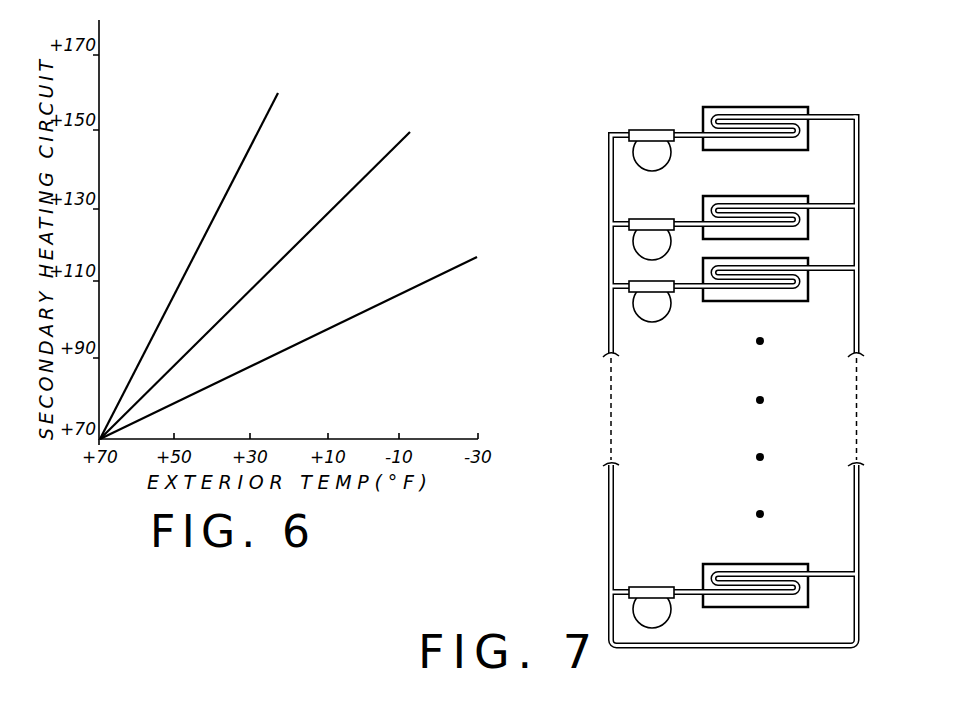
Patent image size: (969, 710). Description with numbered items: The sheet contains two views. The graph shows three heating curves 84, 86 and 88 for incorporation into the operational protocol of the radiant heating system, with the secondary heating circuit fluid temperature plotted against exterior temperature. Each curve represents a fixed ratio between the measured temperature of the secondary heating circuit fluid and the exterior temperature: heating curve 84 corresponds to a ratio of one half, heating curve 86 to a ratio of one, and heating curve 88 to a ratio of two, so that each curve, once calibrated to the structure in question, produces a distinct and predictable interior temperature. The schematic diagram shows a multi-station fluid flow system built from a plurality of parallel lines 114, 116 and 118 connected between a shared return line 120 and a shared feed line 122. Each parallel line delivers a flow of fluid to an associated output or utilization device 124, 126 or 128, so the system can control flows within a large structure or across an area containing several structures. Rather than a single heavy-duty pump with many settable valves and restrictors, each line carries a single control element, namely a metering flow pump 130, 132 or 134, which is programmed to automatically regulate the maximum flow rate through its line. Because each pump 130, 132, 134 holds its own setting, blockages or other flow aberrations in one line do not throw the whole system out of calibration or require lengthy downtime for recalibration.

In FIG. 6, the heating curve 84 is at (404, 290).
In FIG. 6, the heating curve 86 is at (356, 186).
In FIG. 6, the heating curve 88 is at (263, 125).
In FIG. 7, the parallel line 114 is at (828, 94).
In FIG. 7, the parallel line 116 is at (820, 203).
In FIG. 7, the parallel line 118 is at (822, 578).
In FIG. 7, the return line 120 is at (855, 316).
In FIG. 7, the feed line 122 is at (608, 540).
In FIG. 7, the output or utilization device 124 is at (745, 107).
In FIG. 7, the output or utilization device 126 is at (752, 196).
In FIG. 7, the output or utilization device 128 is at (745, 564).
In FIG. 7, the metering flow pump 130 is at (648, 143).
In FIG. 7, the metering flow pump 132 is at (650, 231).
In FIG. 7, the metering flow pump 134 is at (651, 598).